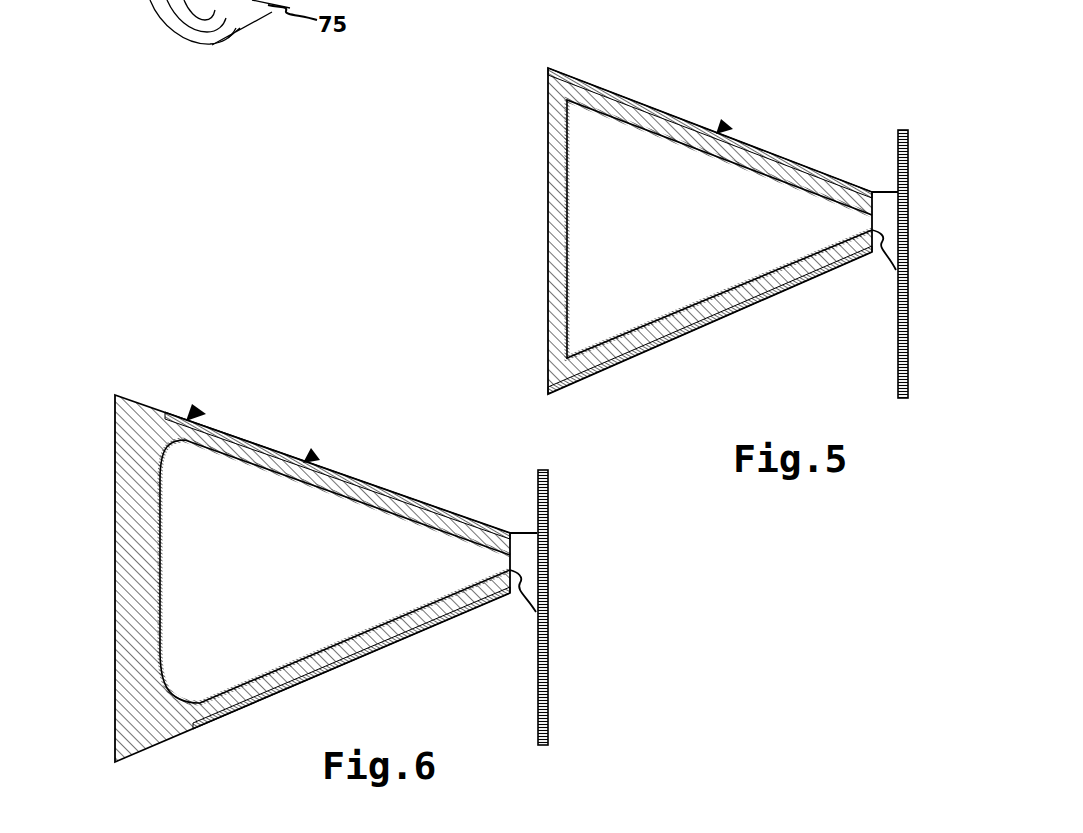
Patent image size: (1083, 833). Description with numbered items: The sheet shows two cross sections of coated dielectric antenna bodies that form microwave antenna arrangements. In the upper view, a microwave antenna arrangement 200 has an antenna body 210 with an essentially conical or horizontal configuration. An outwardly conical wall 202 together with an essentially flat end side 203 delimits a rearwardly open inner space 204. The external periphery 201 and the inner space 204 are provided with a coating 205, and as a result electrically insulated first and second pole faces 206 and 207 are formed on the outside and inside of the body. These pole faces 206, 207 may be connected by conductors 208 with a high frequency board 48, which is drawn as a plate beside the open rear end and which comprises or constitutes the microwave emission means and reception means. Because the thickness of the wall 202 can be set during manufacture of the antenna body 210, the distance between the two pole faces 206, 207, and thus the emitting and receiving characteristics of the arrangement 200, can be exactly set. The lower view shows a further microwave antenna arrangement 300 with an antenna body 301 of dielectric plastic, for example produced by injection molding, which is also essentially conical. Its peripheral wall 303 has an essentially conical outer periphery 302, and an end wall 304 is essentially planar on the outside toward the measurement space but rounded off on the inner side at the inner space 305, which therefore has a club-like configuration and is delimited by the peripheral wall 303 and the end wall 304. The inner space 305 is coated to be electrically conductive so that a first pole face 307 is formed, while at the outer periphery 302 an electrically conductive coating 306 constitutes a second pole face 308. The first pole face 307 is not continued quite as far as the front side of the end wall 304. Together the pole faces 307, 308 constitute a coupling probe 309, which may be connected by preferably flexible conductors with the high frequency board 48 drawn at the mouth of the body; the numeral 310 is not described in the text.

In FIG. 5, the high frequency board 48 is at (898, 347).
In FIG. 6, the high frequency board 48 is at (538, 688).
In FIG. 5, the microwave antenna arrangement 200 is at (659, 236).
In FIG. 5, the external periphery 201 is at (632, 100).
In FIG. 5, the outwardly conical wall 202 is at (650, 351).
In FIG. 5, the flat end side 203 is at (671, 236).
In FIG. 5, the inner space 204 is at (680, 247).
In FIG. 5, the coating 205 is at (770, 163).
In FIG. 5, the first pole face 206 is at (571, 210).
In FIG. 5, the second pole face 207 is at (595, 375).
In FIG. 5, the conductors 208 is at (893, 193).
In FIG. 5, the antenna body 210 is at (728, 124).
In FIG. 6, the microwave antenna arrangement 300 is at (288, 507).
In FIG. 6, the antenna body 301 is at (314, 453).
In FIG. 6, the outer periphery 302 is at (312, 540).
In FIG. 6, the peripheral wall 303 is at (238, 430).
In FIG. 6, the end wall 304 is at (114, 582).
In FIG. 6, the inner space 305 is at (270, 577).
In FIG. 6, the electrically conductive coating 306 is at (354, 496).
In FIG. 6, the first pole face 307 is at (160, 537).
In FIG. 6, the second pole face 308 is at (408, 496).
In FIG. 6, the coupling probe 309 is at (199, 406).
In FIG. 6, the horn mouth 310 is at (524, 533).